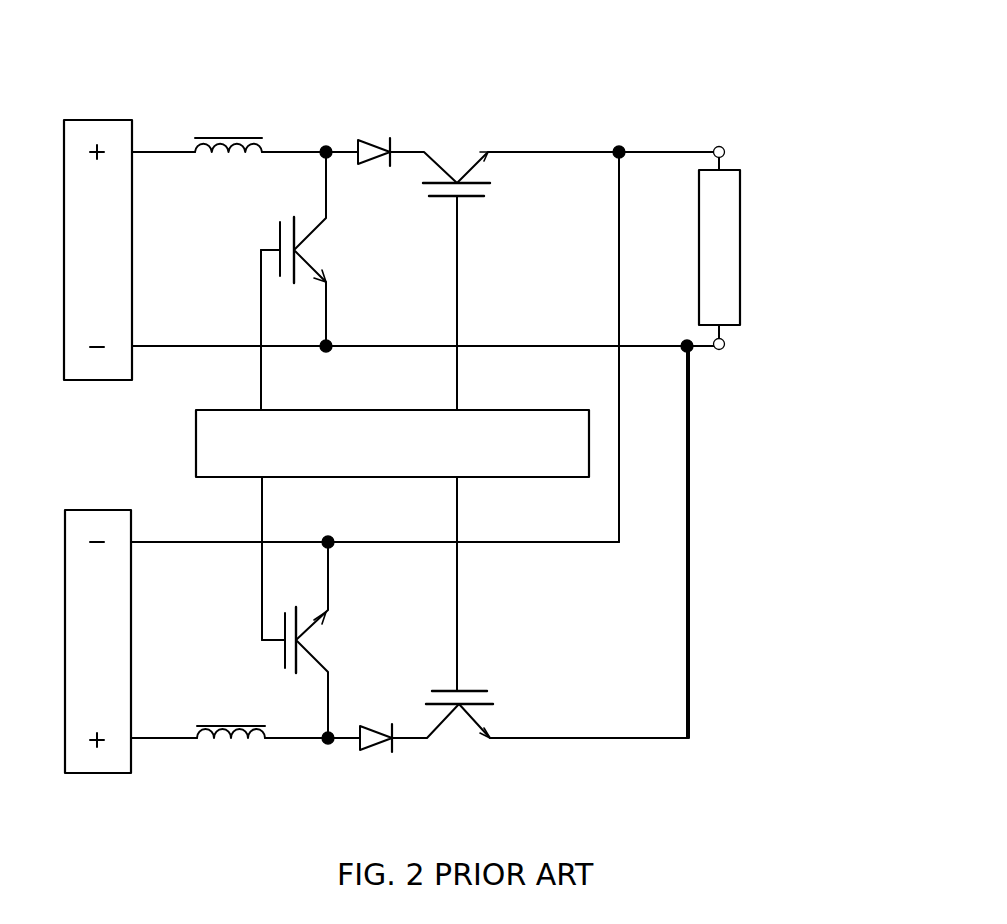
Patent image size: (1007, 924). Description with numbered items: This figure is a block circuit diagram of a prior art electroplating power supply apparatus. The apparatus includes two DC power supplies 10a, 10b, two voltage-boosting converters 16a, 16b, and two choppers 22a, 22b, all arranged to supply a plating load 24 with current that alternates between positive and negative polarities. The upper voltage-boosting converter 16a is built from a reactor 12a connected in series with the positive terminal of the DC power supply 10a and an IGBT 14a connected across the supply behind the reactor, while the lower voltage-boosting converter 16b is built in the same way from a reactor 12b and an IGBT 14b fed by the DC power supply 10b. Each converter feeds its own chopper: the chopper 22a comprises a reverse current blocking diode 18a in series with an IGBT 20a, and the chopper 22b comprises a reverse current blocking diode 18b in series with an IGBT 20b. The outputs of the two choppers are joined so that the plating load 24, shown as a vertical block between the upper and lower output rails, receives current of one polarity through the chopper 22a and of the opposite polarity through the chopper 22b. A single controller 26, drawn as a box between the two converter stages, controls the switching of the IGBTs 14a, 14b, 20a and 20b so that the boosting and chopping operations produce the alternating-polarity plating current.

The DC power supply 10a is at (100, 133).
The DC power supply 10b is at (98, 527).
The reactor 12a is at (225, 137).
The reactor 12b is at (240, 745).
The IGBT 14a is at (310, 249).
The IGBT 14b is at (311, 640).
The voltage-boosting converter 16a is at (235, 238).
The voltage-boosting converter 16b is at (220, 658).
The reverse current blocking diode 18a is at (360, 142).
The reverse current blocking diode 18b is at (370, 748).
The IGBT 20a is at (456, 407).
The IGBT 20b is at (459, 729).
The chopper 22a is at (568, 275).
The chopper 22b is at (436, 653).
The plating load 24 is at (728, 208).
The controller 26 is at (486, 422).